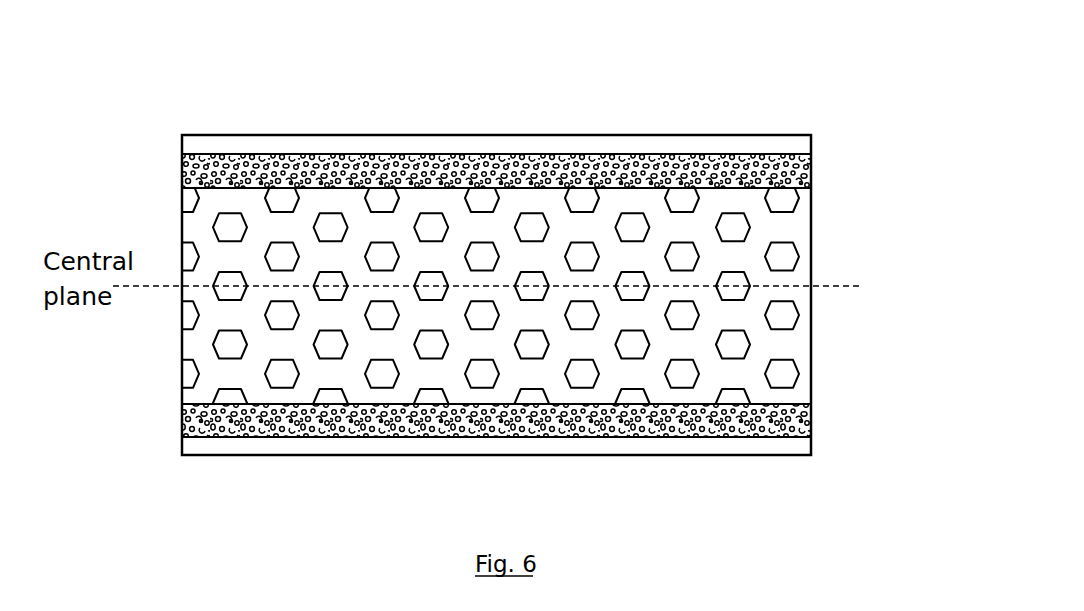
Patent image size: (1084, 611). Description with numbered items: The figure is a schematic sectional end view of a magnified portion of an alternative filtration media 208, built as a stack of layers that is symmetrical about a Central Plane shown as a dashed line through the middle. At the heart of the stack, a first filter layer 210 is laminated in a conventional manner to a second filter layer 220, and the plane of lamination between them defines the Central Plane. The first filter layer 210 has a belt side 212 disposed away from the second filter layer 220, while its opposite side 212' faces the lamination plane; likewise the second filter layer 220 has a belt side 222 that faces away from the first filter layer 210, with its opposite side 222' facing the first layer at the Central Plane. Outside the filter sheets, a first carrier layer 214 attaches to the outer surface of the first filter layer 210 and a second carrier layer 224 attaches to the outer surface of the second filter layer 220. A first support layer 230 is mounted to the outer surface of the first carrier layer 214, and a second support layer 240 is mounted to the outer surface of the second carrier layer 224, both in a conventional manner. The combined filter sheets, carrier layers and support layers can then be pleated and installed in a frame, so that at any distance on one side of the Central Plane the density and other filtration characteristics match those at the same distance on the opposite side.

The filtration media 208 is at (728, 124).
The first support layer 230 is at (811, 143).
The belt side of first filter layer 212 is at (440, 161).
The first carrier layer 214 is at (811, 172).
The first filter layer 210 is at (811, 225).
The opposite side of first filter layer 212' is at (134, 235).
The second filter layer 220 is at (811, 349).
The opposite side of second filter layer 222' is at (131, 337).
The belt side of second filter layer 222 is at (435, 429).
The second carrier layer 224 is at (811, 413).
The second support layer 240 is at (811, 447).